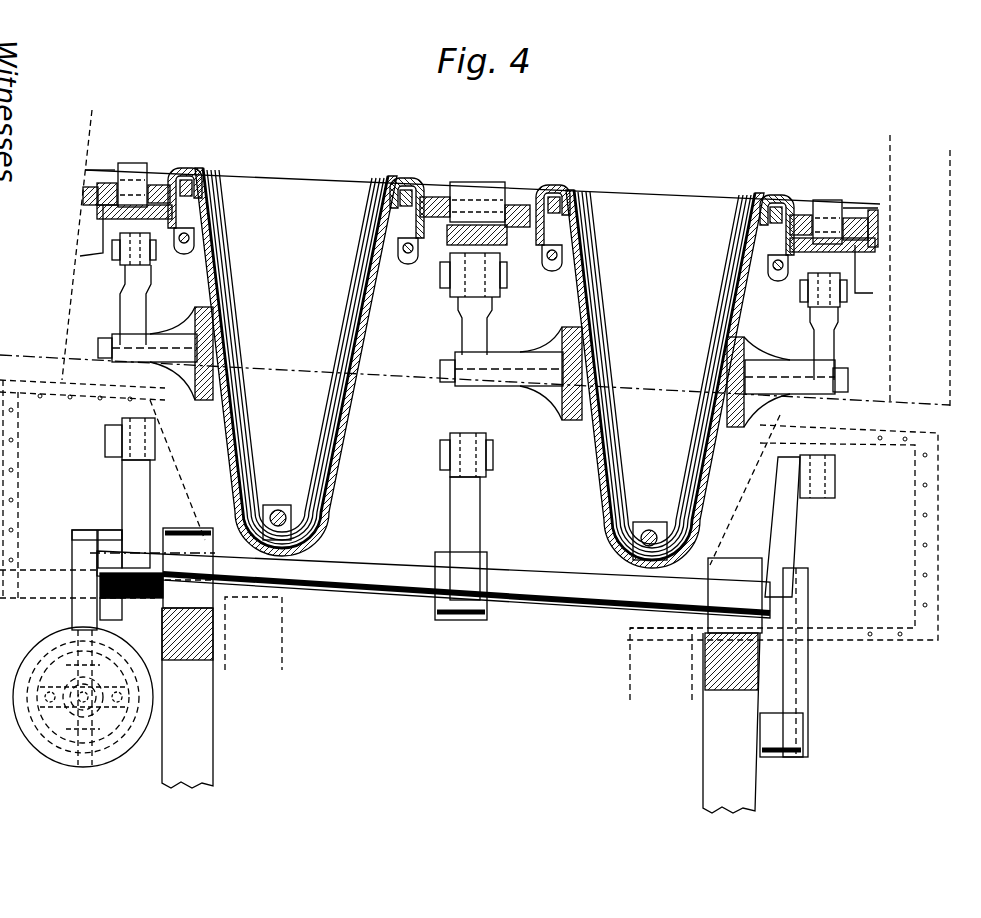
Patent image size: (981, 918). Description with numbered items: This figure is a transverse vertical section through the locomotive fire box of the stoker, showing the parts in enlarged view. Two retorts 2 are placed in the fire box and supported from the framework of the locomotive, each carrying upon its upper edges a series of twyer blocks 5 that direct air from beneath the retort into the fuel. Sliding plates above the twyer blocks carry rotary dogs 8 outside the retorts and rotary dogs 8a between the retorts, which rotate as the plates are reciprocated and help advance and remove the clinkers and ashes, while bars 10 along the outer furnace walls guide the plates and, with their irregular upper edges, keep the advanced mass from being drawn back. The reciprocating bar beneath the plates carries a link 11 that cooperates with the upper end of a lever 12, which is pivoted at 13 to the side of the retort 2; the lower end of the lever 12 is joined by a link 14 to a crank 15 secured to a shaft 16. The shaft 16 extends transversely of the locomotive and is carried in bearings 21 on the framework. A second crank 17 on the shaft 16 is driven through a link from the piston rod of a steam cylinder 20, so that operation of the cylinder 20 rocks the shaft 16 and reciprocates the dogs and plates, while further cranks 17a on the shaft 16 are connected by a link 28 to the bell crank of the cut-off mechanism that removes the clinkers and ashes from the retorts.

The retort 2 is at (312, 185).
The twyer block 5 is at (185, 168).
The rotary dog 8 is at (133, 165).
The rotary dog 8a is at (480, 186).
The bar 10 is at (92, 172).
The link 11 is at (115, 250).
The lever 12 is at (125, 300).
The pivot 13 is at (105, 347).
The link 14 is at (110, 442).
The crank 15 is at (125, 498).
The shaft 16 is at (560, 600).
The second crank 17 is at (78, 598).
The crank 17a is at (806, 668).
The cylinder 20 is at (55, 652).
The bearing 21 is at (195, 545).
The link 28 is at (770, 760).